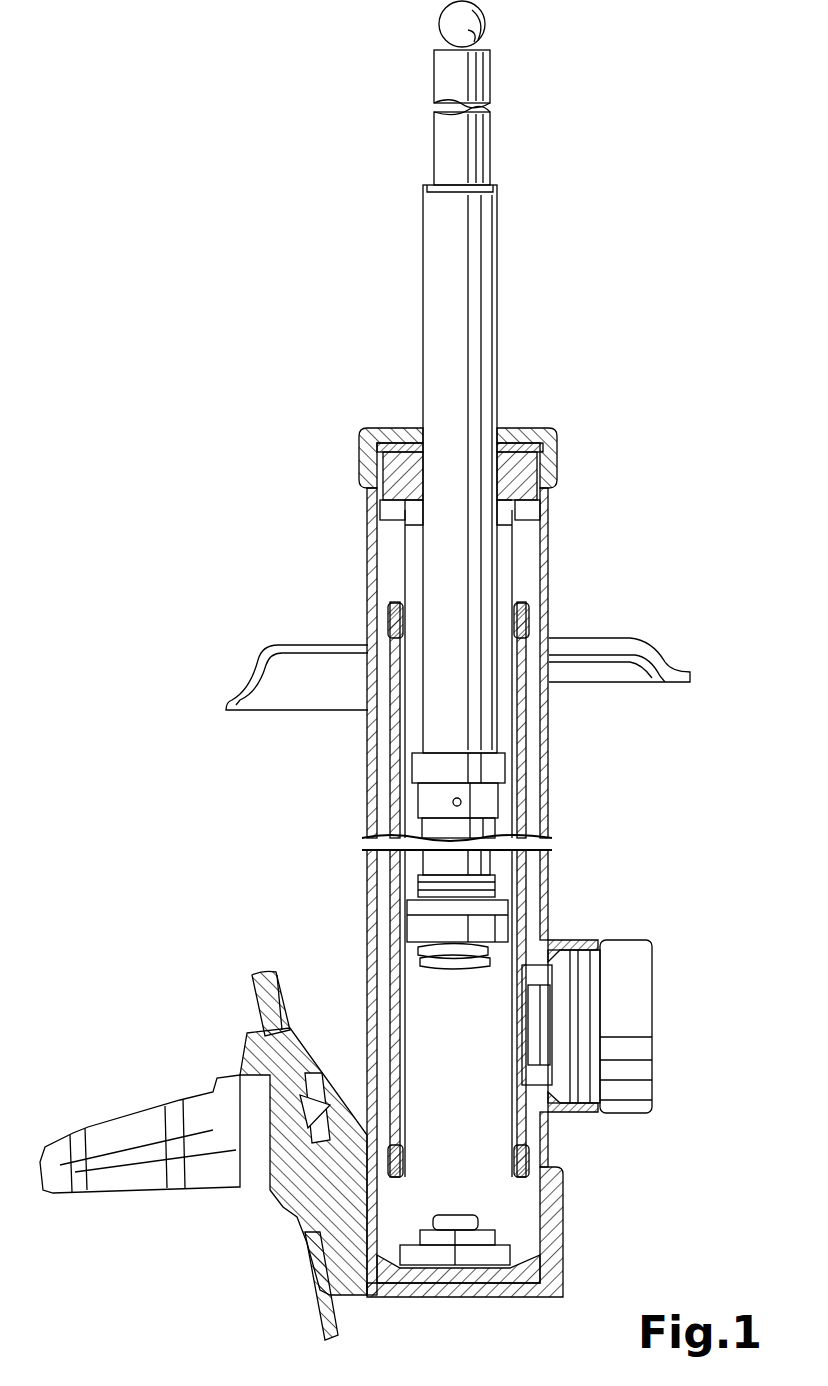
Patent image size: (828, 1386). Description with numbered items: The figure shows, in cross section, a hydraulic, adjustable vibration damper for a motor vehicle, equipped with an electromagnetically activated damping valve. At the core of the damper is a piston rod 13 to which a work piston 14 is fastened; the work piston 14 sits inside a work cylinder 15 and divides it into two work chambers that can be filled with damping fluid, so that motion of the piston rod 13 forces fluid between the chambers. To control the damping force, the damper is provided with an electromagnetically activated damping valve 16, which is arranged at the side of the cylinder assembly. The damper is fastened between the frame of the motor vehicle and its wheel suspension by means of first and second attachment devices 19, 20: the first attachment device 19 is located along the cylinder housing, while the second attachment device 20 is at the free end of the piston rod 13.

The piston rod 13 is at (480, 575).
The work piston 14 is at (497, 922).
The work cylinder 15 is at (527, 972).
The electromagnetically activated damping valve 16 is at (635, 1012).
The first attachment device 19 is at (650, 641).
The second attachment device 20 is at (478, 28).